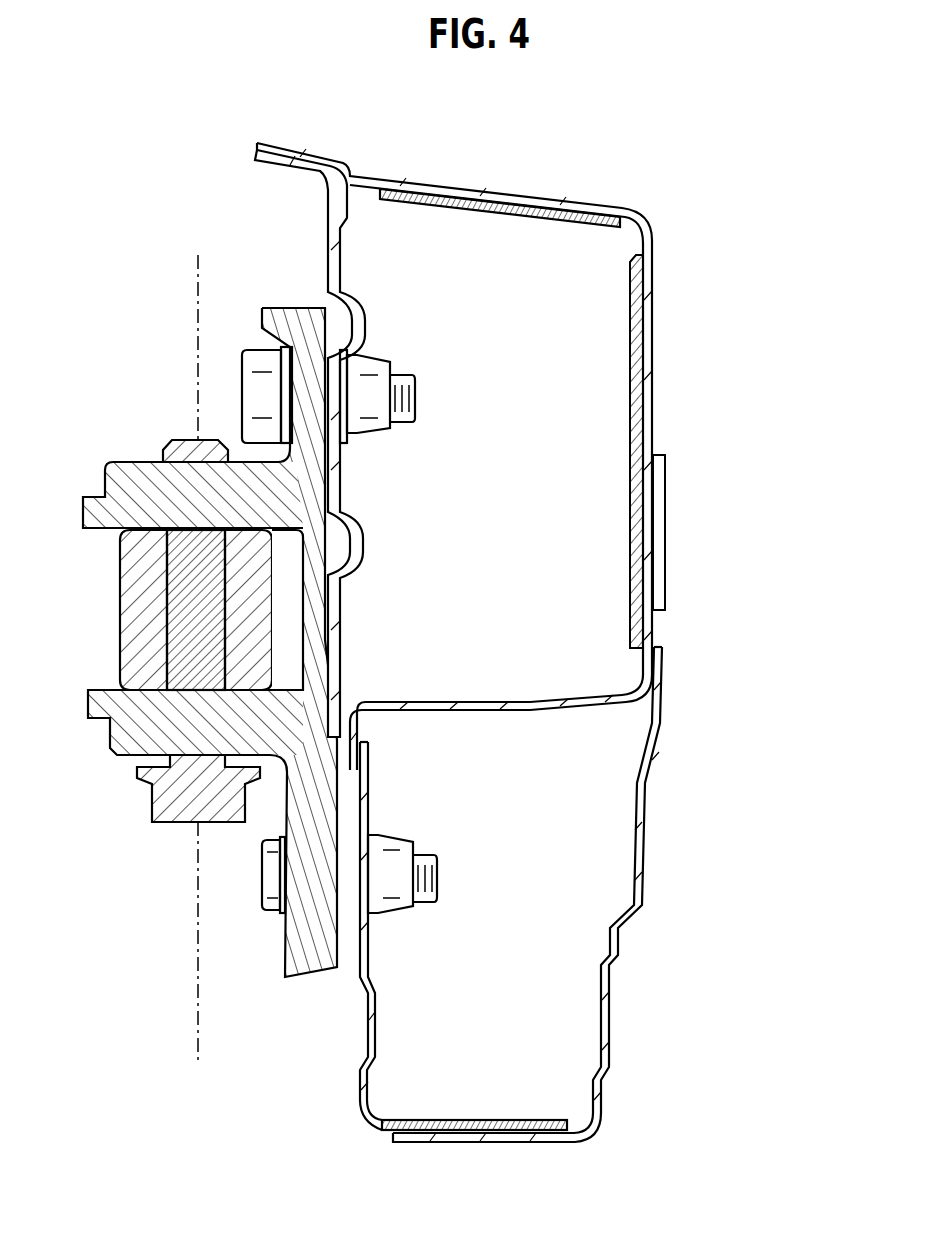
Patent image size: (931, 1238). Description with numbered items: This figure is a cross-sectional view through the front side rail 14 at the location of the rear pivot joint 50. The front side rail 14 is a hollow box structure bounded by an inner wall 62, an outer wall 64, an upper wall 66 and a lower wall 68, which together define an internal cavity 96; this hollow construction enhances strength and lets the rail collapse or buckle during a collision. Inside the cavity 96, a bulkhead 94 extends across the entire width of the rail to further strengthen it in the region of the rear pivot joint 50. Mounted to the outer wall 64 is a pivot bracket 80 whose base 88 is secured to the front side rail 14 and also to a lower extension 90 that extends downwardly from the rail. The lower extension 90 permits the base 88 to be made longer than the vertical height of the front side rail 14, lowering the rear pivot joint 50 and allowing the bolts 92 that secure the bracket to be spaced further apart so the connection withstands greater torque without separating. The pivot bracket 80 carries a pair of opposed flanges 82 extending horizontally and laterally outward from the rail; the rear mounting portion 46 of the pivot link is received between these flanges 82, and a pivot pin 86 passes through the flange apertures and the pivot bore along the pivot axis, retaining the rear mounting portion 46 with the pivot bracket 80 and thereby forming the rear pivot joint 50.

The front side rail 14 is at (584, 168).
The rear mounting portion 46 is at (130, 613).
The rear pivot joint 50 is at (160, 385).
The inner wall 62 is at (653, 437).
The outer wall 64 is at (328, 248).
The upper wall 66 is at (396, 180).
The lower wall 68 is at (533, 712).
The pivot bracket 80 is at (84, 760).
The opposed flanges 82 is at (145, 490).
The pivot pin 86 is at (190, 660).
The base 88 is at (300, 815).
The lower extension 90 is at (647, 883).
The bolts 92 is at (255, 395).
The bulkhead 94 is at (556, 198).
The cavity 96 is at (510, 480).